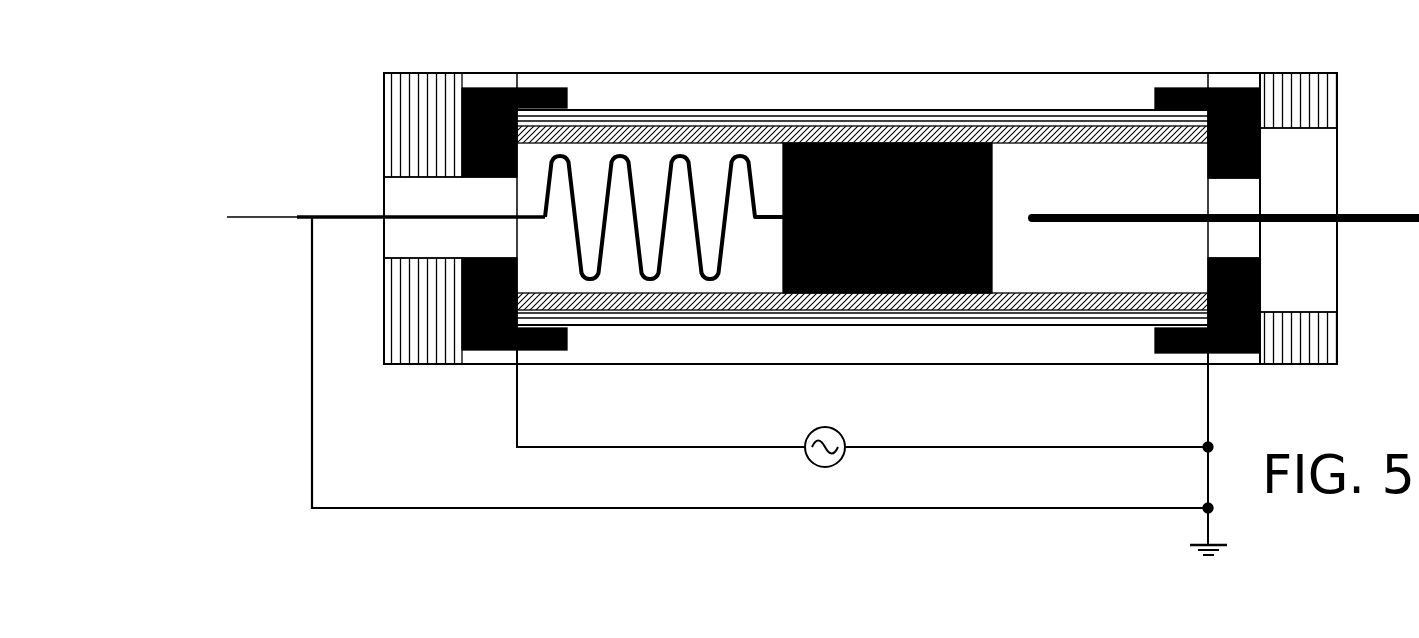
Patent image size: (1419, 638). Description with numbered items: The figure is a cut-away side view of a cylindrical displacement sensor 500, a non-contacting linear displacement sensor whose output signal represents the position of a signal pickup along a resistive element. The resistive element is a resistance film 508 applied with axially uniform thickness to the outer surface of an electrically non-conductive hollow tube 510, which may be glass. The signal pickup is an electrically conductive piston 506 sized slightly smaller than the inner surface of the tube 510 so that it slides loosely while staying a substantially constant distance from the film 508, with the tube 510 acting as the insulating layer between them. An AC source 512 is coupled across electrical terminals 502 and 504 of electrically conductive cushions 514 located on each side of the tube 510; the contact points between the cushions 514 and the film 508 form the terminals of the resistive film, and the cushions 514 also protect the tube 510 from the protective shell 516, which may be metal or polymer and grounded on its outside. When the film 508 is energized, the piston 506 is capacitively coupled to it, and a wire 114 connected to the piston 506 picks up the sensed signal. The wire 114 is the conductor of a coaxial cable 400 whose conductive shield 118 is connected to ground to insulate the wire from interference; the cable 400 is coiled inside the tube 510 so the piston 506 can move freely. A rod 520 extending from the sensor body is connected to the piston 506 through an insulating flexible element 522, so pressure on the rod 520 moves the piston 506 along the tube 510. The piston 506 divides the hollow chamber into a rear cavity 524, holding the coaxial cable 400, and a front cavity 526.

The cylindrical displacement sensor 500 is at (348, 42).
The wire 114 is at (265, 215).
The conductive shield 118 is at (312, 265).
The coaxial cable 400 is at (590, 280).
The electrical terminal 502 is at (517, 350).
The electrical terminal 504 is at (1205, 353).
The piston 506 is at (992, 175).
The resistance film 508 is at (768, 110).
The electrically non-conductive hollow tube 510 is at (1125, 143).
The AC source 512 is at (805, 455).
The electrically conductive cushions 514 is at (567, 102).
The protective shell 516 is at (770, 72).
The rod 520 is at (1193, 214).
The flexible element 522 is at (1023, 215).
The rear cavity 524 is at (770, 269).
The front cavity 526 is at (1038, 274).